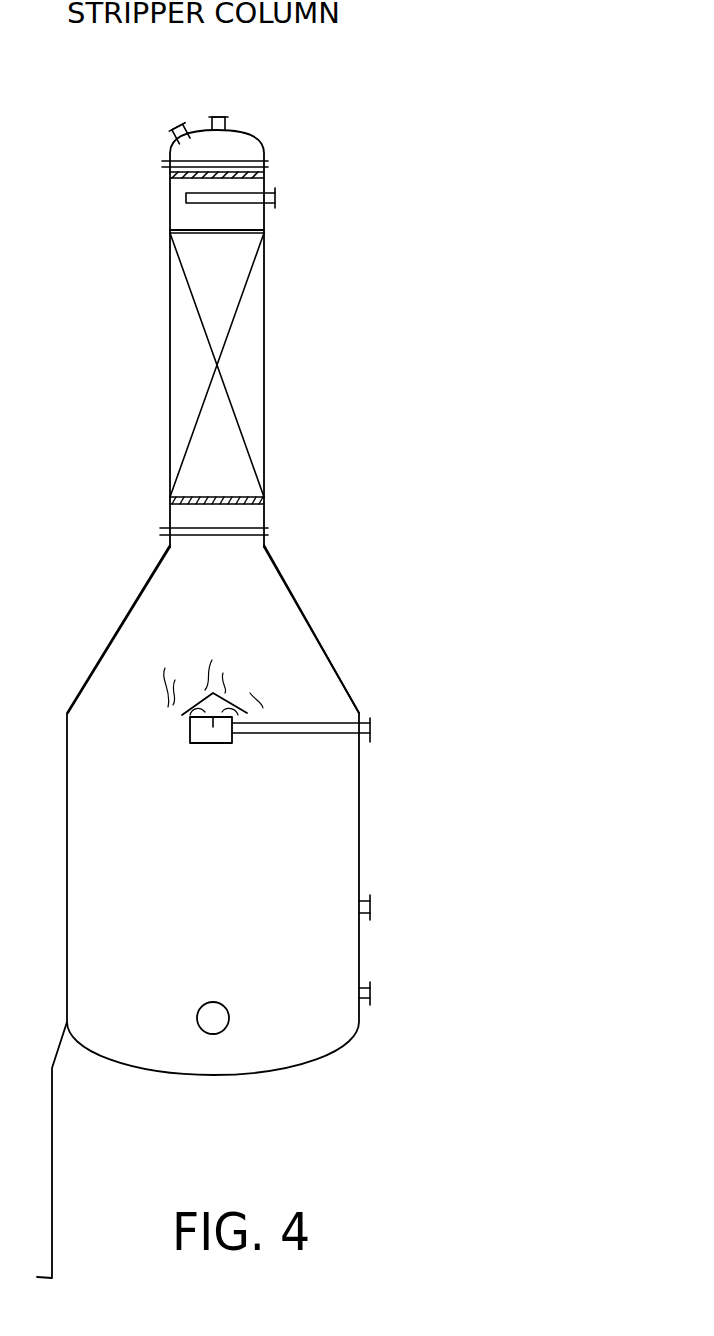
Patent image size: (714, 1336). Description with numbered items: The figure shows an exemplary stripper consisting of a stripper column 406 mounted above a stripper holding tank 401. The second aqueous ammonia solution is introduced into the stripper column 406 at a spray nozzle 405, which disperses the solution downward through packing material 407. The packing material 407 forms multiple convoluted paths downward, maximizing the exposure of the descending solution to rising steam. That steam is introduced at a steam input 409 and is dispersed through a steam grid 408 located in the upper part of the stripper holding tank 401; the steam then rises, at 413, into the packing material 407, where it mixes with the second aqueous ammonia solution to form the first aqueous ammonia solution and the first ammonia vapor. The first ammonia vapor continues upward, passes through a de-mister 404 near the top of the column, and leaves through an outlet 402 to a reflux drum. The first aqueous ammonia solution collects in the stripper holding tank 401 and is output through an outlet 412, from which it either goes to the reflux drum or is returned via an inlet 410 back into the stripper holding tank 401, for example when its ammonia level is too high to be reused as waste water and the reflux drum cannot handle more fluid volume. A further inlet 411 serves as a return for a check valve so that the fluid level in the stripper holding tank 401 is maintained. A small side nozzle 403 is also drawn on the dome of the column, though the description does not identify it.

The stripper holding tank 401 is at (359, 837).
The outlet 402 is at (226, 112).
The side inlet nozzle 403 is at (178, 122).
The de-mister 404 is at (268, 180).
The spray nozzle 405 is at (285, 202).
The stripper column 406 is at (265, 282).
The packing material 407 is at (238, 357).
The steam grid 408 is at (247, 695).
The steam input 409 is at (378, 732).
The inlet 410 is at (377, 901).
The inlet 411 is at (377, 990).
The outlet 412 is at (213, 1002).
The rising steam 413 is at (233, 565).